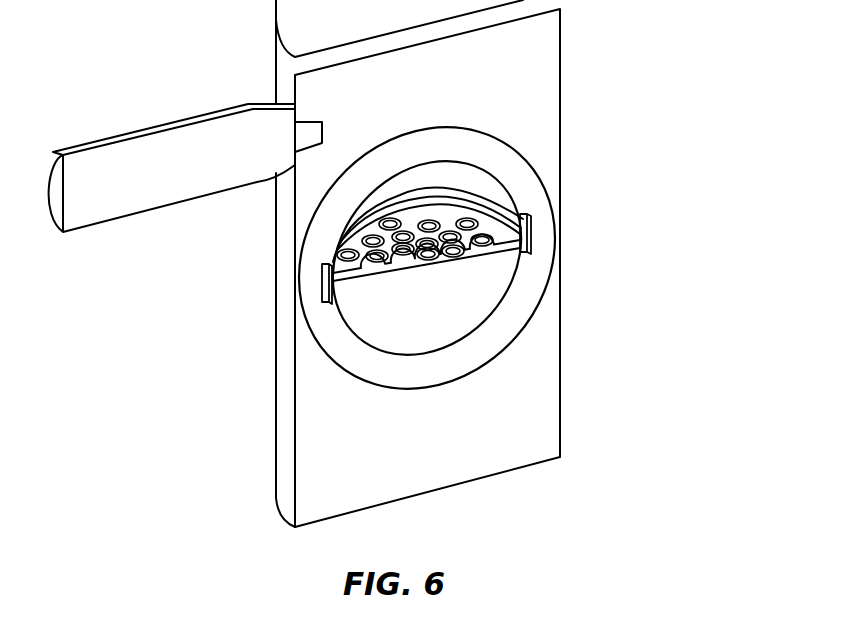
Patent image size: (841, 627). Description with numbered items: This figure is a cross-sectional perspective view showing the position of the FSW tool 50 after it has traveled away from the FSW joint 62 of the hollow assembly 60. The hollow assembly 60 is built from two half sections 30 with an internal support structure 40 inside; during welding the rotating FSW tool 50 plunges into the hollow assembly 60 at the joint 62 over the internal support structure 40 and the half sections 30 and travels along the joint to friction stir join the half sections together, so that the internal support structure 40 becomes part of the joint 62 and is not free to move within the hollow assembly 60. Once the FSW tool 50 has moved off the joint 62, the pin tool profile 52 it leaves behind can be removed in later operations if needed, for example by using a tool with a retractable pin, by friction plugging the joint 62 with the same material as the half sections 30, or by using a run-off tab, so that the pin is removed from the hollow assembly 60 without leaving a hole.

The half sections 30 is at (533, 89).
The internal support structure 40 is at (437, 262).
The FSW tool 50 is at (123, 198).
The pin tool profile 52 is at (323, 128).
The hollow assembly 60 is at (585, 182).
The FSW joint 62 is at (533, 232).